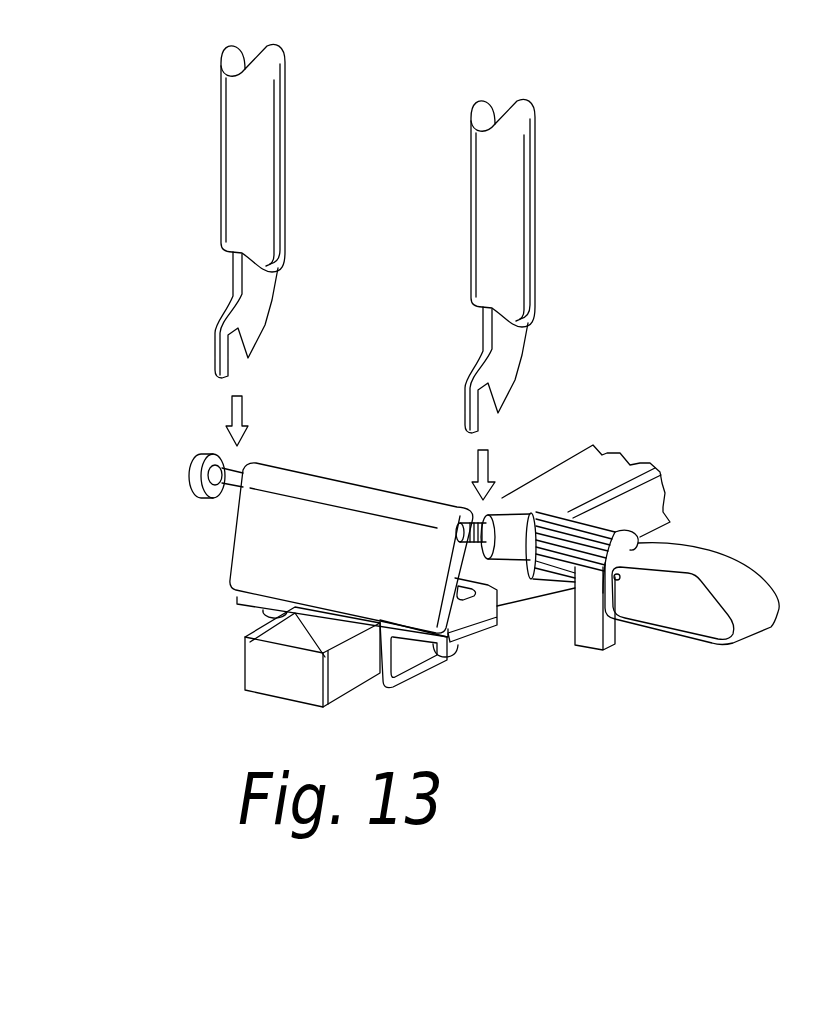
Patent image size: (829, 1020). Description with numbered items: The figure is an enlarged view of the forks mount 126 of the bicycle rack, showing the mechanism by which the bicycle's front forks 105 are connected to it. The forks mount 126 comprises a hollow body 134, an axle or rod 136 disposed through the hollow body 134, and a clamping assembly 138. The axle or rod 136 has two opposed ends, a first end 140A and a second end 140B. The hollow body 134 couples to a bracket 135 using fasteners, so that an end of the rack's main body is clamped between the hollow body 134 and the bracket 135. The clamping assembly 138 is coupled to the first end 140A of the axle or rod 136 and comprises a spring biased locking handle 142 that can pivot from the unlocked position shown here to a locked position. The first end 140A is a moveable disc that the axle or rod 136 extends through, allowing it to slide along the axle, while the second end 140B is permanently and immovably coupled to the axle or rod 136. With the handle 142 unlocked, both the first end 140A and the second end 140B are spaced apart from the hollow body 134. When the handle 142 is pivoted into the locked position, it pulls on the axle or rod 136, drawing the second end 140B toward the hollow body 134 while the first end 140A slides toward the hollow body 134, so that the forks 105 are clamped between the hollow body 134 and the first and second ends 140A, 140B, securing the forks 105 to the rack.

The front forks 105 is at (496, 180).
The forks mount 126 is at (186, 583).
The hollow body 134 is at (343, 495).
The bracket 135 is at (410, 657).
The axle or rod 136 is at (233, 483).
The clamping assembly 138 is at (622, 510).
The first end 140A is at (507, 547).
The second end 140B is at (195, 450).
The spring biased locking handle 142 is at (730, 556).